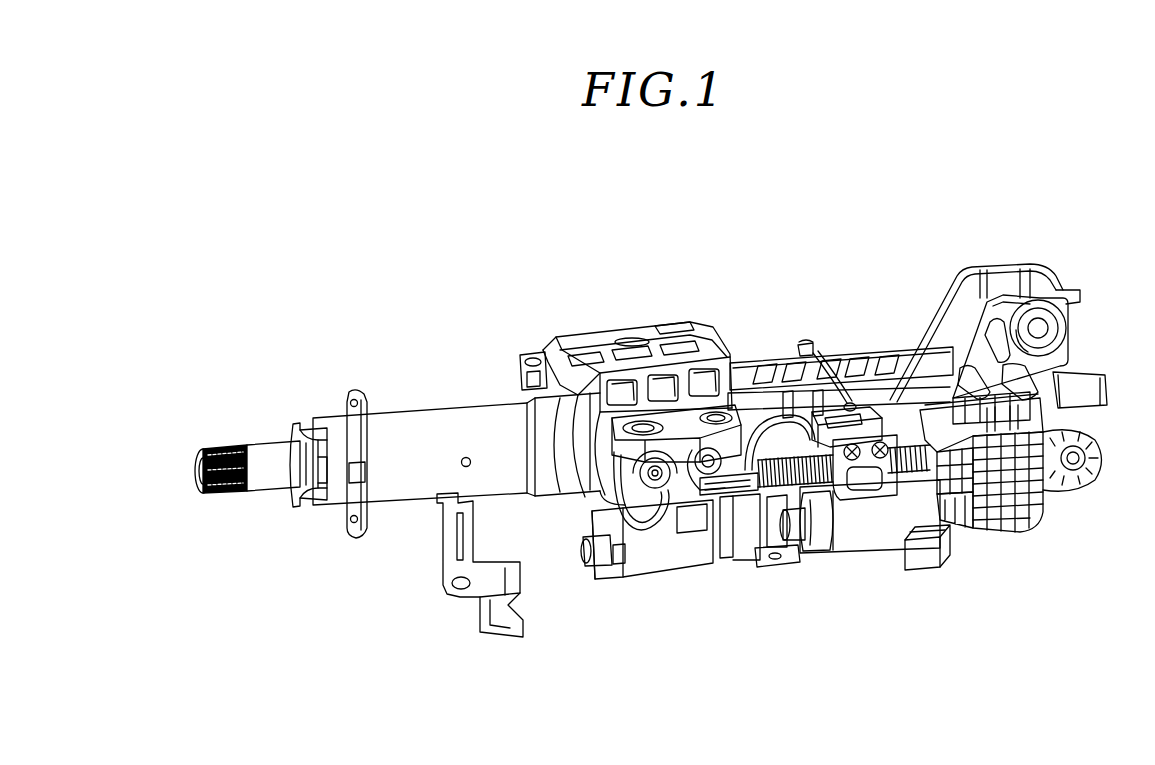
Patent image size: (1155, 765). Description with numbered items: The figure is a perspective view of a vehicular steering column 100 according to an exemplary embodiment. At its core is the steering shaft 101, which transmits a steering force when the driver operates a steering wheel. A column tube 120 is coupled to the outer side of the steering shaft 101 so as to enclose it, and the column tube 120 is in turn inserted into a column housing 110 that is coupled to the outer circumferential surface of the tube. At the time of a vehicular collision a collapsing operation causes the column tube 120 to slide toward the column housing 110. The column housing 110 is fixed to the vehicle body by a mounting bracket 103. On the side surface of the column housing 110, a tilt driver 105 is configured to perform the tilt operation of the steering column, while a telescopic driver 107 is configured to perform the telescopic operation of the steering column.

The vehicular steering column 100 is at (228, 237).
The steering shaft 101 is at (270, 452).
The mounting bracket 103 is at (600, 340).
The tilt driver 105 is at (648, 595).
The telescopic driver 107 is at (860, 573).
The column housing 110 is at (855, 370).
The column tube 120 is at (415, 425).